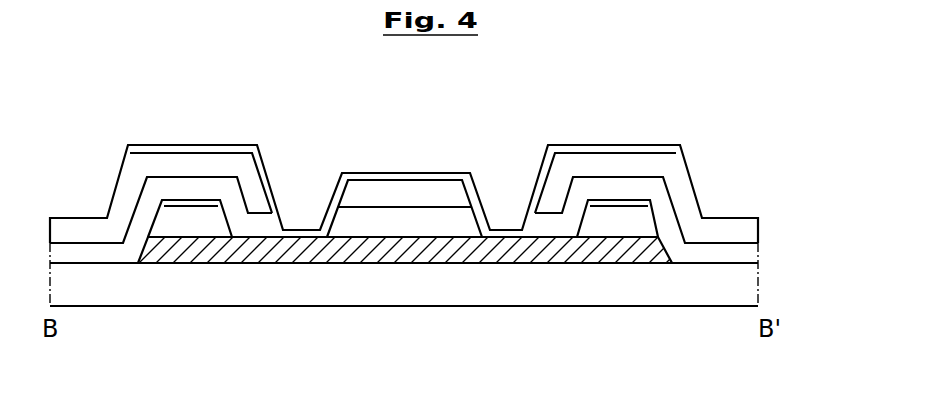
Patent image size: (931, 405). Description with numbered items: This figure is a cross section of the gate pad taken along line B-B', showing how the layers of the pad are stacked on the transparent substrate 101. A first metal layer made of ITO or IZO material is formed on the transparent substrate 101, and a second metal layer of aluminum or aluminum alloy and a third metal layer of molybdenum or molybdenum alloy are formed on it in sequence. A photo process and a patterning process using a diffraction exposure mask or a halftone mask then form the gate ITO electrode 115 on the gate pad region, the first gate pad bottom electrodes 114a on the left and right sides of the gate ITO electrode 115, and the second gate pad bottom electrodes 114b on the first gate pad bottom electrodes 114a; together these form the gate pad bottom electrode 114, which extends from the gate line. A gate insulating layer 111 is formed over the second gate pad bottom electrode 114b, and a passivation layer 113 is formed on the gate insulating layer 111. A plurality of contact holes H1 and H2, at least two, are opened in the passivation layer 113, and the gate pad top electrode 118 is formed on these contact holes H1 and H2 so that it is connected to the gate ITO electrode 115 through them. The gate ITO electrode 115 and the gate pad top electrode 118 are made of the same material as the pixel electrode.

The transparent substrate 101 is at (758, 288).
The gate insulating layer 111 is at (758, 255).
The passivation layer 113 is at (758, 228).
The gate pad bottom electrode 114 is at (192, 296).
The first gate pad bottom electrode 114a is at (172, 227).
The second gate pad bottom electrode 114b is at (213, 202).
The gate ITO electrode 115 is at (307, 258).
The gate pad top electrode 118 is at (407, 177).
The contact hole H1 is at (299, 177).
The contact hole H2 is at (506, 175).